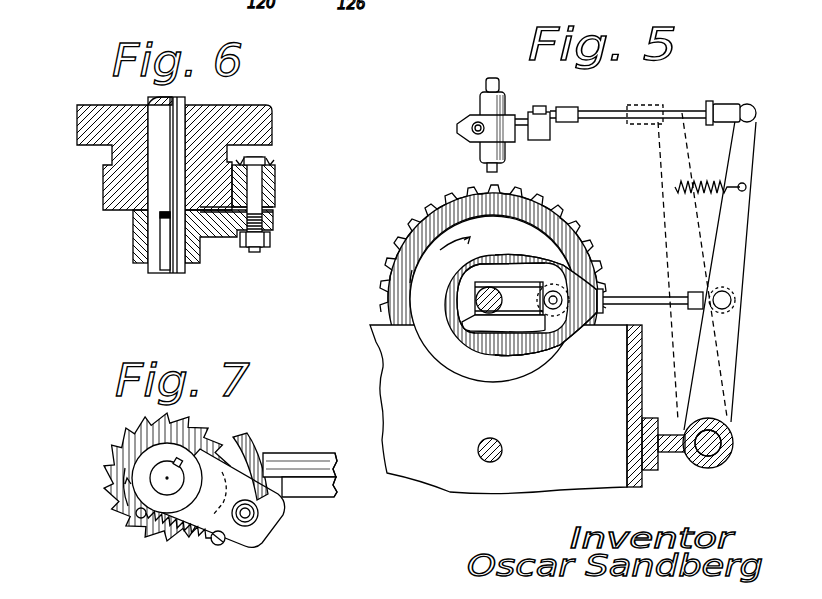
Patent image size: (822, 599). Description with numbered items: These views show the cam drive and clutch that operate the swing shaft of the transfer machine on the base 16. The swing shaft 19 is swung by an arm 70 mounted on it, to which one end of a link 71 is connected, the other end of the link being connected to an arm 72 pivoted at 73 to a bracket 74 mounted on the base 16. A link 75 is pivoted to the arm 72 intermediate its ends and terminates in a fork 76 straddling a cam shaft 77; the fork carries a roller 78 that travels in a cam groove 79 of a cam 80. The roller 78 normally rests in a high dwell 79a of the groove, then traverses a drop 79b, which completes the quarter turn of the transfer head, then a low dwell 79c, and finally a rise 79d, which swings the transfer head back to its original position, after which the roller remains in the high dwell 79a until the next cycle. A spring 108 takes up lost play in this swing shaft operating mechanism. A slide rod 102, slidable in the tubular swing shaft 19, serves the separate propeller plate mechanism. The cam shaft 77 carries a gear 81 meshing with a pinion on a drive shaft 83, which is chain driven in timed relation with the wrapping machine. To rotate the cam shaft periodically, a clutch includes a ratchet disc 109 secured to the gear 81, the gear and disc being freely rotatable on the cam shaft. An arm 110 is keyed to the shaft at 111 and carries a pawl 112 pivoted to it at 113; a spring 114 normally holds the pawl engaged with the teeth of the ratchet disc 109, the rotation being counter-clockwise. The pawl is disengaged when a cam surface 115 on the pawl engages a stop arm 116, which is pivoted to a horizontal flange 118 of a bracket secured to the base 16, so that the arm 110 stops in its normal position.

In FIG. 5, the base 16 is at (385, 410).
In FIG. 7, the base 16 is at (358, 415).
In FIG. 5, the swing shaft 19 is at (480, 108).
In FIG. 5, the arm 70 is at (552, 132).
In FIG. 5, the link 71 is at (604, 110).
In FIG. 5, the arm 72 is at (742, 168).
In FIG. 5, the pivot 73 is at (716, 462).
In FIG. 5, the bracket 74 is at (666, 468).
In FIG. 5, the link 75 is at (625, 297).
In FIG. 5, the fork 76 is at (568, 262).
In FIG. 5, the cam shaft 77 is at (493, 296).
In FIG. 6, the cam shaft 77 is at (177, 274).
In FIG. 7, the cam shaft 77 is at (160, 484).
In FIG. 5, the roller 78 is at (565, 335).
In FIG. 5, the cam groove 79 is at (476, 352).
In FIG. 5, the high dwell 79a is at (526, 352).
In FIG. 5, the drop 79b is at (500, 264).
In FIG. 5, the low dwell 79c is at (465, 290).
In FIG. 5, the rise 79d is at (455, 330).
In FIG. 5, the cam 80 is at (408, 283).
In FIG. 5, the gear 81 is at (424, 226).
In FIG. 6, the gear 81 is at (272, 126).
In FIG. 5, the drive shaft 83 is at (500, 456).
In FIG. 5, the slide rod 102 is at (486, 168).
In FIG. 5, the spring 108 is at (672, 189).
In FIG. 6, the ratchet disc 109 is at (110, 181).
In FIG. 7, the ratchet disc 109 is at (150, 432).
In FIG. 6, the arm 110 is at (224, 236).
In FIG. 7, the arm 110 is at (230, 530).
In FIG. 6, the key 111 is at (165, 246).
In FIG. 7, the key 111 is at (180, 462).
In FIG. 6, the pawl 112 is at (277, 186).
In FIG. 7, the pawl 112 is at (227, 546).
In FIG. 6, the pivot 113 is at (256, 250).
In FIG. 7, the pivot 113 is at (256, 524).
In FIG. 7, the spring 114 is at (178, 528).
In FIG. 7, the cam surface 115 is at (243, 437).
In FIG. 7, the stop arm 116 is at (318, 448).
In FIG. 7, the horizontal flange 118 is at (315, 493).